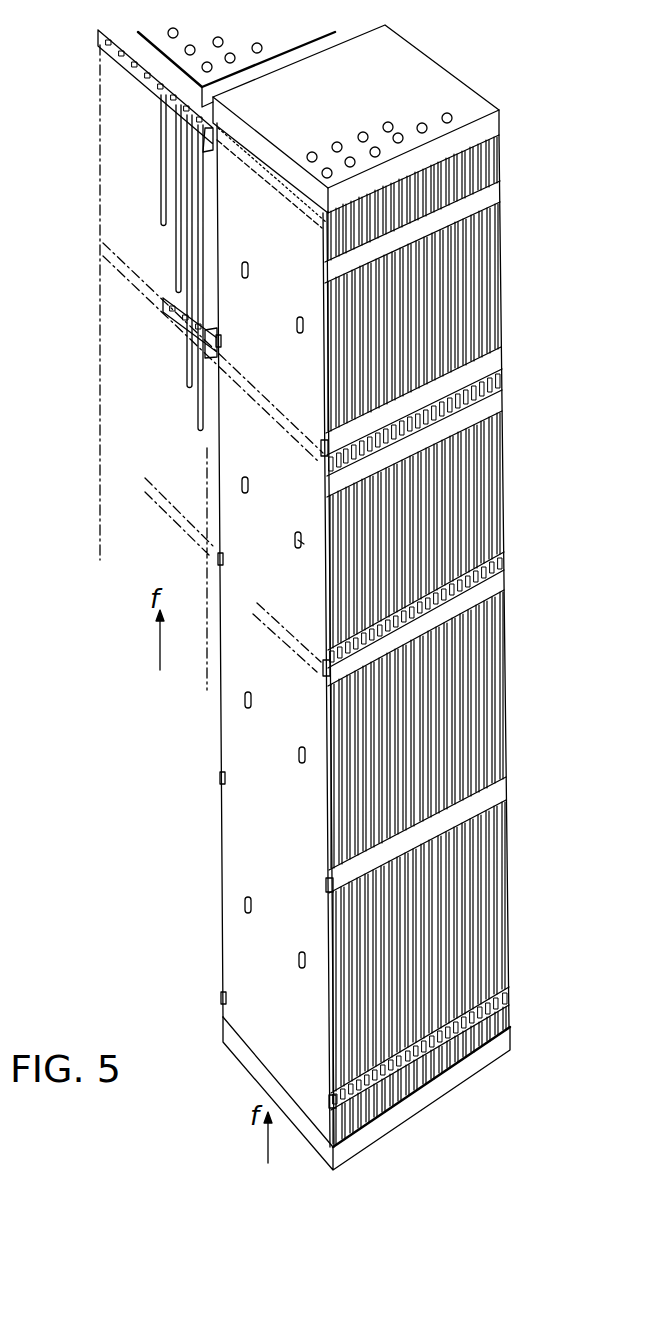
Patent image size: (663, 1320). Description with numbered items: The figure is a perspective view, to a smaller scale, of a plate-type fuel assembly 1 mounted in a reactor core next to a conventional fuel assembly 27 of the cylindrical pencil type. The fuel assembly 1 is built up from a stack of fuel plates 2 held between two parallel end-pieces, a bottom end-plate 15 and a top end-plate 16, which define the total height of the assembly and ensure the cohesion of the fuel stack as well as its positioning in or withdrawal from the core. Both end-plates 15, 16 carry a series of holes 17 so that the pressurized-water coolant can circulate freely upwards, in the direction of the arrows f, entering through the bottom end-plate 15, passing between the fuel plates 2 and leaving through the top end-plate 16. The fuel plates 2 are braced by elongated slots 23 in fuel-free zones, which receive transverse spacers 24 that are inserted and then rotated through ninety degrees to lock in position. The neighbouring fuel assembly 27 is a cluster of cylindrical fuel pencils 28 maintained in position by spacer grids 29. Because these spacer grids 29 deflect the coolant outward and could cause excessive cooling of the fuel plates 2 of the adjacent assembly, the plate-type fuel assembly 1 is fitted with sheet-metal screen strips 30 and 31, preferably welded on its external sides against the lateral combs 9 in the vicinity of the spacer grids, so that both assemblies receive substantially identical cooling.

The fuel assembly 1 is at (497, 1072).
The fuel plates 2 is at (485, 233).
The lateral combs 9 is at (222, 778).
The bottom end-plate 15 is at (510, 1030).
The top end-plate 16 is at (470, 88).
The holes 17 is at (398, 133).
The elongated slots 23 is at (247, 480).
The transverse spacers 24 is at (291, 546).
The conventional fuel assembly 27 is at (97, 475).
The cylindrical fuel pencils 28 is at (200, 238).
The spacer grids 29 is at (122, 68).
The sheet-metal strip 30 is at (460, 412).
The sheet-metal strip 31 is at (483, 362).